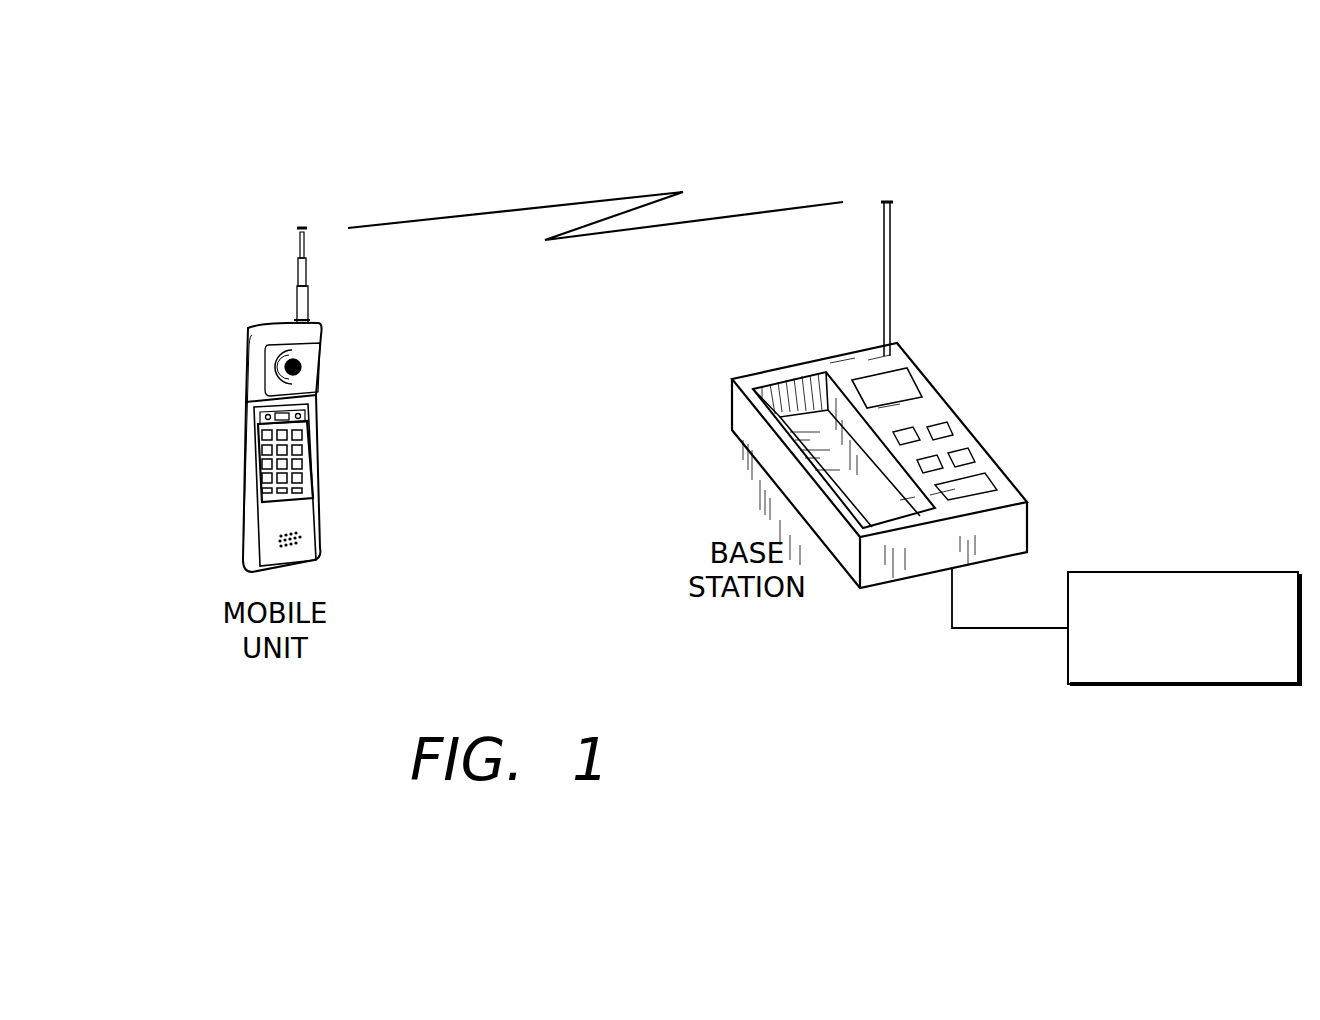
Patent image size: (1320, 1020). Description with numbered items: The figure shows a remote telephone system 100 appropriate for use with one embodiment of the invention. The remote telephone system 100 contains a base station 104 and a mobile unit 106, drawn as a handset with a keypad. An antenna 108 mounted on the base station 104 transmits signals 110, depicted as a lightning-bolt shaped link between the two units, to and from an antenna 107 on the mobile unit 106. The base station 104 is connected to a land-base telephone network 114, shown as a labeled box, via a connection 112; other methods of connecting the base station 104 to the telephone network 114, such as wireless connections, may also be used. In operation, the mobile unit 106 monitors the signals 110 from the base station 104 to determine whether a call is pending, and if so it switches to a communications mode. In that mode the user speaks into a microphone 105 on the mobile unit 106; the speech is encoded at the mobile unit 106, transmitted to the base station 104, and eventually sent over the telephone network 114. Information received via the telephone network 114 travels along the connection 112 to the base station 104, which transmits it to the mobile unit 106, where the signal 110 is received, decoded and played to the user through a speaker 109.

The remote telephone system 100 is at (800, 100).
The base station 104 is at (838, 358).
The microphone 105 is at (303, 534).
The mobile unit 106 is at (305, 460).
The antenna 107 is at (300, 228).
The antenna 108 is at (891, 283).
The speaker 109 is at (303, 370).
The signals 110 is at (498, 198).
The connection 112 is at (1013, 630).
The land-base telephone network 114 is at (1213, 686).